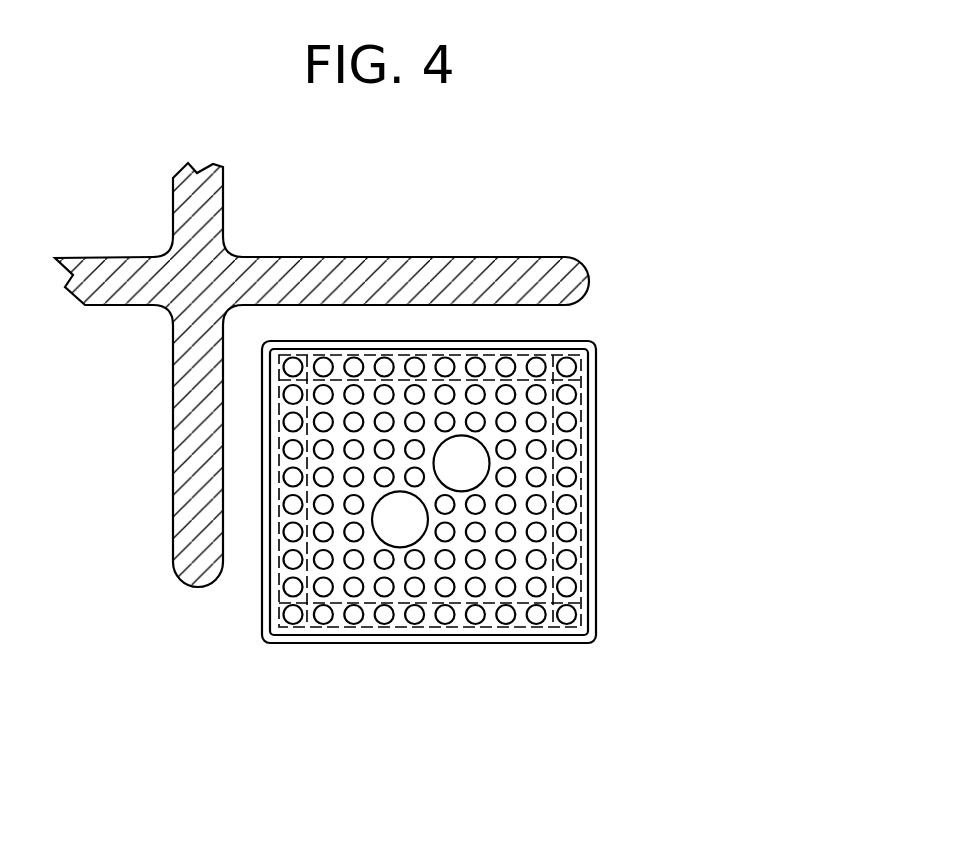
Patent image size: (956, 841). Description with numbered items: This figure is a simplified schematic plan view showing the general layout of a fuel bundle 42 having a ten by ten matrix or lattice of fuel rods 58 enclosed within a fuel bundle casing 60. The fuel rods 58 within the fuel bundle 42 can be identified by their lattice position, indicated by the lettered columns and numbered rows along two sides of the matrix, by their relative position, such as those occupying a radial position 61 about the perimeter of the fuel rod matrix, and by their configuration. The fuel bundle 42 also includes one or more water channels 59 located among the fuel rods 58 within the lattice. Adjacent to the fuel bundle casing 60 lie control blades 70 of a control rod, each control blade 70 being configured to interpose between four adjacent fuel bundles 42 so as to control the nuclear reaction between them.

The fuel bundle 42 is at (466, 477).
The fuel rods 58 is at (566, 421).
The water channels 59 is at (520, 463).
The fuel bundle casing 60 is at (596, 371).
The radial position 61 is at (338, 355).
The control blades 70 is at (533, 258).